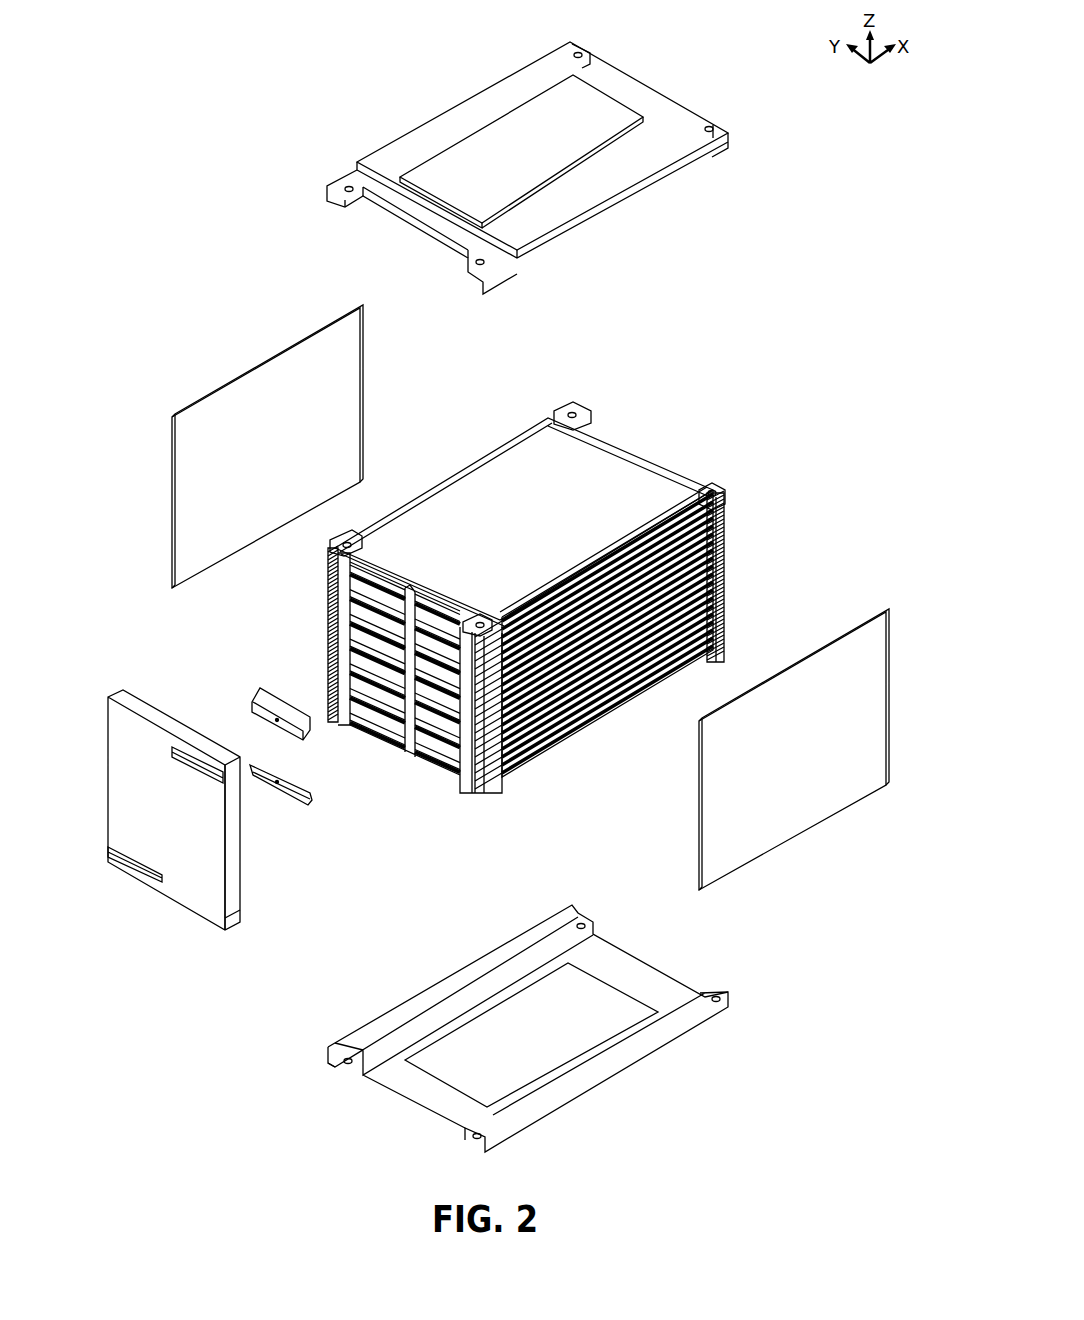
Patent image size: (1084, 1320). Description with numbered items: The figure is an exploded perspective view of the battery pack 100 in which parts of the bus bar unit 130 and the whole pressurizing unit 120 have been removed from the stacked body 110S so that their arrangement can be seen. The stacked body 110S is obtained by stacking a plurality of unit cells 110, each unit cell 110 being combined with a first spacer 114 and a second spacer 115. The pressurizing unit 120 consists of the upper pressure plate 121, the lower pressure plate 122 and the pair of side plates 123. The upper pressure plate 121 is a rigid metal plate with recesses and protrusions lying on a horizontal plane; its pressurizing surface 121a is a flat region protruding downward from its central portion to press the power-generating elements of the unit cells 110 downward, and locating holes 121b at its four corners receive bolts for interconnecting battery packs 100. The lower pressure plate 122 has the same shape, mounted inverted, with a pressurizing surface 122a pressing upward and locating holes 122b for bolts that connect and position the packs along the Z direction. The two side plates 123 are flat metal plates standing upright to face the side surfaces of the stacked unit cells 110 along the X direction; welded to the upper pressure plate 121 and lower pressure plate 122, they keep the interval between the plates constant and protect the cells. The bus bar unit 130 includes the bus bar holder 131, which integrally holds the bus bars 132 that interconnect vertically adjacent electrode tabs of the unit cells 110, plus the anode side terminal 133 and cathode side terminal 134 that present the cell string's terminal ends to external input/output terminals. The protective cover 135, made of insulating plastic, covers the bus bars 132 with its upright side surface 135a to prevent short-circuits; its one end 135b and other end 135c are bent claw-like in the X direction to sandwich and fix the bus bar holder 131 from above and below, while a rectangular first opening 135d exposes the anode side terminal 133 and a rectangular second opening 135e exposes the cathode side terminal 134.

The battery pack 100 is at (130, 43).
The pressurizing unit 120 is at (466, 77).
The upper pressure plate 121 is at (411, 125).
The pressurizing surface 121a is at (480, 185).
The locating holes 121b is at (334, 181).
The side plates 123 is at (237, 380).
The stacked body 110S is at (622, 436).
The unit cells 110 is at (623, 475).
The first spacer 114 is at (500, 757).
The second spacer 115 is at (722, 620).
The bus bar holder 131 is at (323, 630).
The bus bars 132 is at (380, 698).
The bus bar unit 130 is at (260, 673).
The anode side terminal 133 is at (303, 799).
The cathode side terminal 134 is at (267, 780).
The protective cover 135 is at (120, 692).
The side surface 135a is at (218, 850).
The one end 135b is at (175, 725).
The other end 135c is at (233, 922).
The first opening 135d is at (205, 776).
The second opening 135e is at (143, 873).
The lower pressure plate 122 is at (422, 991).
The pressurizing surface 122a is at (565, 1008).
The locating holes 122b is at (335, 1045).